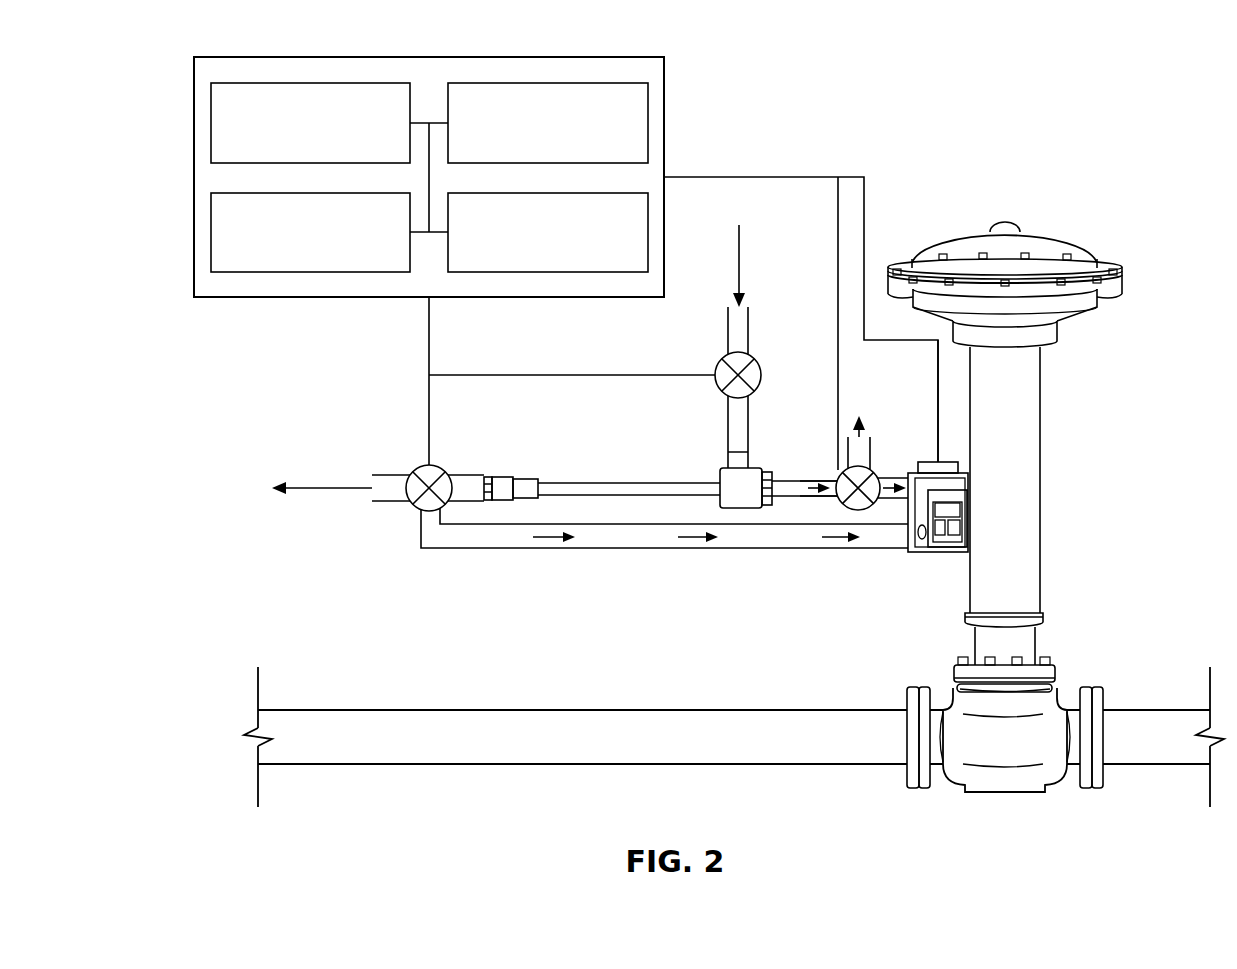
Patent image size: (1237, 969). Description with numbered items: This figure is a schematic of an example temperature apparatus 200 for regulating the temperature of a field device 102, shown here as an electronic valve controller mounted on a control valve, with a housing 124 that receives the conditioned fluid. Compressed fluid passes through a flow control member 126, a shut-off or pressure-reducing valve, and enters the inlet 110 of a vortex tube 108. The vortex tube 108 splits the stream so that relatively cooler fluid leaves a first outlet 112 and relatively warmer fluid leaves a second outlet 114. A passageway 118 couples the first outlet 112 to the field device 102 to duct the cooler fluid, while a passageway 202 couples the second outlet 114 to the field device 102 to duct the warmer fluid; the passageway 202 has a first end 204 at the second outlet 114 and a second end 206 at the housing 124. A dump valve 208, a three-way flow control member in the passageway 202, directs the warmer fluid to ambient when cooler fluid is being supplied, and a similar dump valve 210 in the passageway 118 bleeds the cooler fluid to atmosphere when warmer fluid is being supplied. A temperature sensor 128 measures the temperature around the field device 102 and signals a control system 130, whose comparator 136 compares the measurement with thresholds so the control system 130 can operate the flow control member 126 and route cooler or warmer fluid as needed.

The field device 102 is at (943, 553).
The vortex tube 108 is at (583, 482).
The inlet 110 is at (727, 452).
The first outlet 112 is at (807, 496).
The second outlet 114 is at (487, 477).
The passageway 118 is at (888, 477).
The housing 124 is at (920, 557).
The flow control member 126 is at (762, 367).
The temperature sensor 128 is at (933, 460).
The control system 130 is at (527, 57).
The comparator 136 is at (650, 107).
The temperature apparatus 200 is at (787, 130).
The passageway 202 is at (613, 548).
The first end 204 is at (475, 485).
The second end 206 is at (905, 538).
The dump valve 208 is at (417, 509).
The dump valve 210 is at (838, 481).